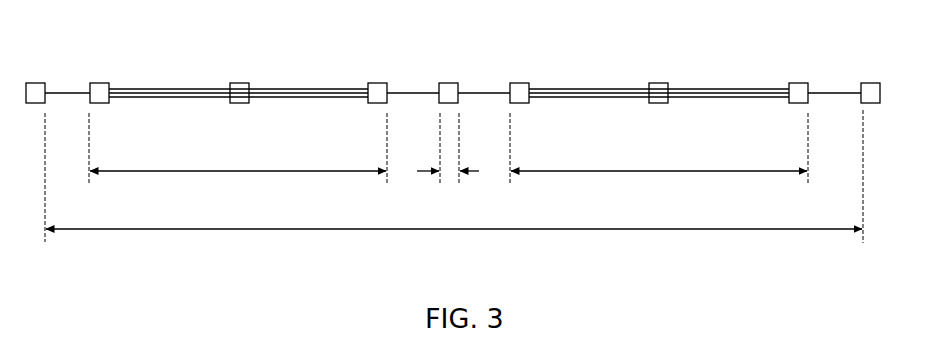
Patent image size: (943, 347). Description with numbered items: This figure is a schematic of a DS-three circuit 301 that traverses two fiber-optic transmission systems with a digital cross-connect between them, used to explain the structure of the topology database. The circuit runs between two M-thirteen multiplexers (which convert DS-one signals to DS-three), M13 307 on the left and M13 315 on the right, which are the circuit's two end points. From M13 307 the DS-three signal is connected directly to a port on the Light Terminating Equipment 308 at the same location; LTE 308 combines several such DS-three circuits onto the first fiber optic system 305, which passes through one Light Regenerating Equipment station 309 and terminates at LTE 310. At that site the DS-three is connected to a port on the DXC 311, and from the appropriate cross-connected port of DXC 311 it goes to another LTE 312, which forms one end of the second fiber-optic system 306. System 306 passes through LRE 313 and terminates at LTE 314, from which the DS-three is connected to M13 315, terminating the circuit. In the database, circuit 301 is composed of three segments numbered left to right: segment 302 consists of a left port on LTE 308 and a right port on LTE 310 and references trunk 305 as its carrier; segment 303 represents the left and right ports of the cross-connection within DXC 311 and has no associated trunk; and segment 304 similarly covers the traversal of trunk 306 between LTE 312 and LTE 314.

The DS-3 circuit 301 is at (428, 230).
The circuit segment 302 is at (243, 170).
The circuit segment 303 is at (452, 173).
The circuit segment 304 is at (660, 170).
The fiber optic system 305 is at (148, 98).
The fiber-optic system 306 is at (565, 98).
The M13 307 is at (33, 82).
The Light Terminating Equipment 308 is at (97, 82).
The Light Regenerating Equipment station 309 is at (237, 82).
The Light Terminating Equipment 310 is at (375, 82).
The DXC-3/3 311 is at (446, 82).
The Light Terminating Equipment 312 is at (517, 82).
The Light Regenerating Equipment 313 is at (656, 82).
The Light Terminating Equipment 314 is at (796, 82).
The M13 315 is at (866, 104).